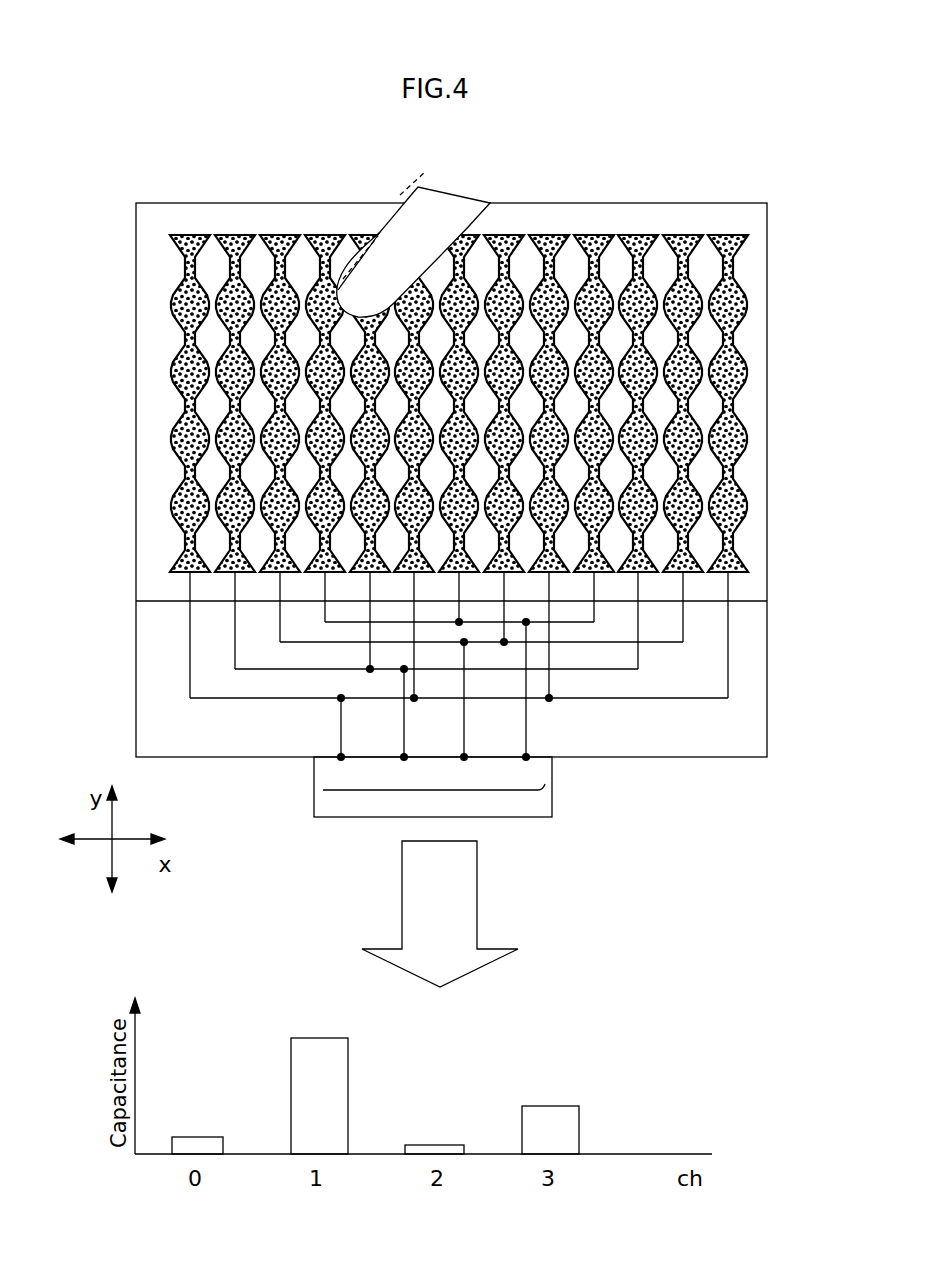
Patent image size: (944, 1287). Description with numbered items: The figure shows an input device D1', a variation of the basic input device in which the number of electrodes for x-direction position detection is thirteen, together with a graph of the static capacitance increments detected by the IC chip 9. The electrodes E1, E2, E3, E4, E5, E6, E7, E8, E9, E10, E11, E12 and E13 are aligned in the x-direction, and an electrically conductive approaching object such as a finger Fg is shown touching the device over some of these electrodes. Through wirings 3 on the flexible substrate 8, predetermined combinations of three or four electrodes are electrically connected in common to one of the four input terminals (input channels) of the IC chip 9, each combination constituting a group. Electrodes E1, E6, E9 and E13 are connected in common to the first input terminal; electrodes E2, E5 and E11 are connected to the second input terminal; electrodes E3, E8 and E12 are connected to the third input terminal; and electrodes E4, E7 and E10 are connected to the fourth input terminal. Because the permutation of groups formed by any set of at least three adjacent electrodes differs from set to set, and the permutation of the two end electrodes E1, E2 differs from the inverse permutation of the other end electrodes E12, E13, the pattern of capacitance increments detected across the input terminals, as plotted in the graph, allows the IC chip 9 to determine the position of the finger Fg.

The input device D1' is at (421, 430).
The electrode E1 is at (193, 247).
The electrode E2 is at (238, 247).
The electrode E3 is at (283, 247).
The electrode E4 is at (328, 247).
The electrode E5 is at (372, 247).
The electrode E6 is at (428, 303).
The electrode E7 is at (462, 247).
The electrode E8 is at (507, 247).
The electrode E9 is at (552, 247).
The electrode E10 is at (597, 247).
The electrode E11 is at (641, 247).
The electrode E12 is at (686, 247).
The electrode E13 is at (731, 247).
The finger Fg is at (402, 193).
The wirings 3 is at (235, 648).
The flexible substrate 8 is at (767, 680).
The IC chip 9 is at (552, 803).